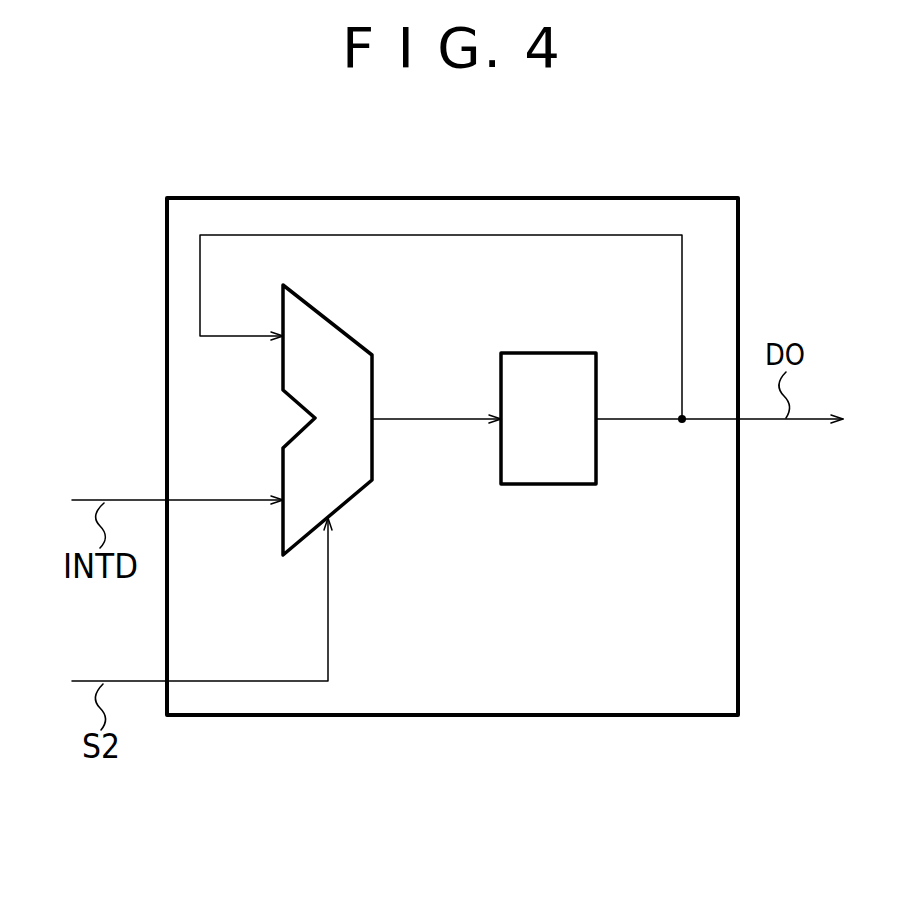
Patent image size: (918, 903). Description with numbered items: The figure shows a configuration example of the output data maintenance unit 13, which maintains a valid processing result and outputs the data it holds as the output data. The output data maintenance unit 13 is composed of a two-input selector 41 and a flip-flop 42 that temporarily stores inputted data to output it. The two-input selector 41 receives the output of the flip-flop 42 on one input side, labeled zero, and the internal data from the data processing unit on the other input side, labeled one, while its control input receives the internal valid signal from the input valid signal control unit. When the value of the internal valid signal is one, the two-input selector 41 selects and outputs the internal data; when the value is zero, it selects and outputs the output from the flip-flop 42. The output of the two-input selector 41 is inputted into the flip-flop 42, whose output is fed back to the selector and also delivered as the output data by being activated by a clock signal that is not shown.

The output data maintenance unit 13 is at (404, 198).
The two-input selector 41 is at (330, 313).
The flip-flop 42 is at (528, 353).